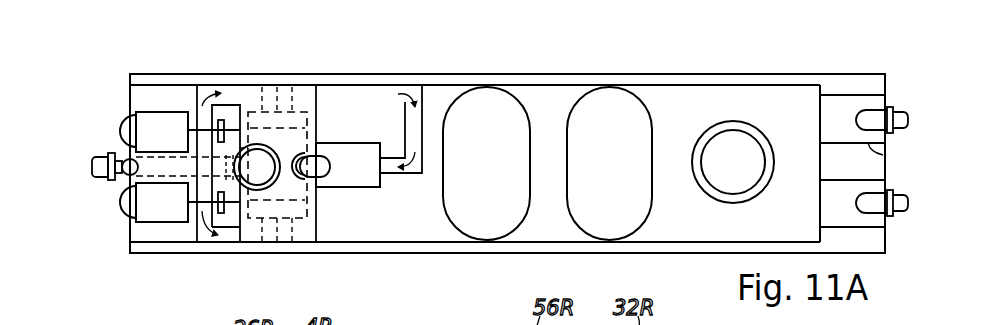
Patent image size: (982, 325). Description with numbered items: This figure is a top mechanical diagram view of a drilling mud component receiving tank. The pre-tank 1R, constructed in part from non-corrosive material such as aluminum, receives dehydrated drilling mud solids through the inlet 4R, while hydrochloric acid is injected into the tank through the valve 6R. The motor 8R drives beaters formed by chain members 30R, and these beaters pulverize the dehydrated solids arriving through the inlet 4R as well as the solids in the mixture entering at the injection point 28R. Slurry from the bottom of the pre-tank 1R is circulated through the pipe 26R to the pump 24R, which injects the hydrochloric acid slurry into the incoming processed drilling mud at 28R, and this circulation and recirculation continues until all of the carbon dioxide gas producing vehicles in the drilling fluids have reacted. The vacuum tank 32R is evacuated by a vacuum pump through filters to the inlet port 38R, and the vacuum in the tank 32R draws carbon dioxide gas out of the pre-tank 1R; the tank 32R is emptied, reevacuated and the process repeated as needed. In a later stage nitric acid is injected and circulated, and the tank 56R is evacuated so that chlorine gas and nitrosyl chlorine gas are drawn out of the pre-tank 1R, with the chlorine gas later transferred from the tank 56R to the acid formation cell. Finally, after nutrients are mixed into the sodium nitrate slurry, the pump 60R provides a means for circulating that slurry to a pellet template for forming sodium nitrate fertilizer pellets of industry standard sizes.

The pre-tank 1R is at (583, 73).
The inlet 4R is at (263, 144).
The valve 6R is at (127, 157).
The motor 8R is at (141, 112).
The pump 24R is at (371, 188).
The pipe 26R is at (192, 104).
The injection point 28R is at (307, 150).
The chain members 30R is at (266, 237).
The vacuum tank 32R is at (650, 120).
The inlet port 38R is at (92, 170).
The tank 56R is at (517, 95).
The pump 60R is at (871, 178).